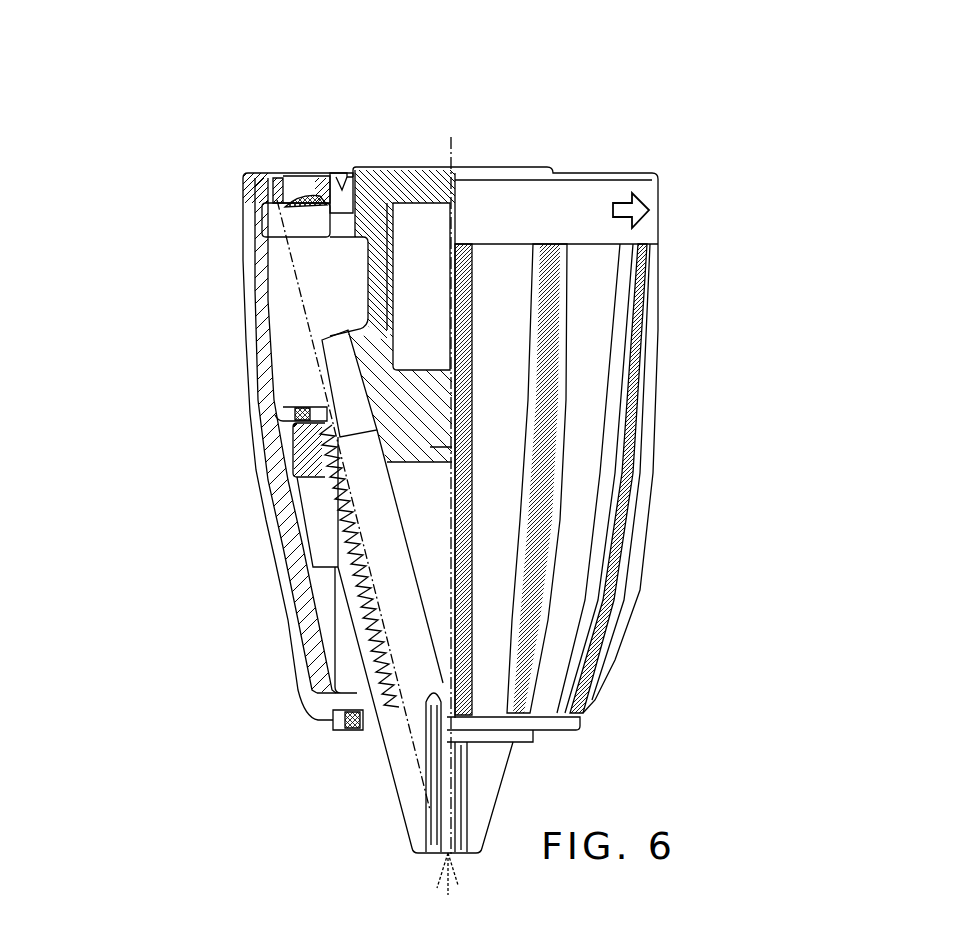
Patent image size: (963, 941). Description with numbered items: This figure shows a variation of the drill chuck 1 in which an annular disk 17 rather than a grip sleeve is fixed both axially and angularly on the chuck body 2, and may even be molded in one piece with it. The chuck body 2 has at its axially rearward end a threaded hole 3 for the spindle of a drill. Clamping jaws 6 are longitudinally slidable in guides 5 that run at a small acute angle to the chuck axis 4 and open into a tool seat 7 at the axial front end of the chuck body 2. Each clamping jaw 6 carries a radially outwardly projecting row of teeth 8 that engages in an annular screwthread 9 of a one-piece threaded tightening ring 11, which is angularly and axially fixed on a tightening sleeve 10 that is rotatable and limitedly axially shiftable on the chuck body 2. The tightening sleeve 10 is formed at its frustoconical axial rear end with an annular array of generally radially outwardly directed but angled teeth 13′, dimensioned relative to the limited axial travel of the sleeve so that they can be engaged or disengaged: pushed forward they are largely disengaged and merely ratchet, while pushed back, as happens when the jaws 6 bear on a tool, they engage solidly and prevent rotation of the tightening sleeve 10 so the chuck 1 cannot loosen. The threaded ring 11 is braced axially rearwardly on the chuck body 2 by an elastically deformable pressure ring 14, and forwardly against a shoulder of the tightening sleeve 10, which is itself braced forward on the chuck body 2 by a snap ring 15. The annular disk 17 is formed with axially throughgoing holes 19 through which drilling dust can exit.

The drill chuck 1 is at (687, 174).
The chuck body 2 is at (365, 167).
The threaded hole 3 is at (421, 195).
The chuck axis 4 is at (455, 143).
The guides 5 is at (338, 560).
The clamping jaws 6 is at (428, 722).
The tool seat 7 is at (445, 527).
The row of teeth 8 is at (432, 710).
The annular screwthread 9 is at (330, 462).
The tightening sleeve 10 is at (630, 583).
The threaded tightening ring 11 is at (290, 455).
The teeth 13′ is at (243, 183).
The pressure ring 14 is at (277, 405).
The snap ring 15 is at (335, 728).
The annular disk 17 is at (300, 180).
The holes 19 is at (270, 175).